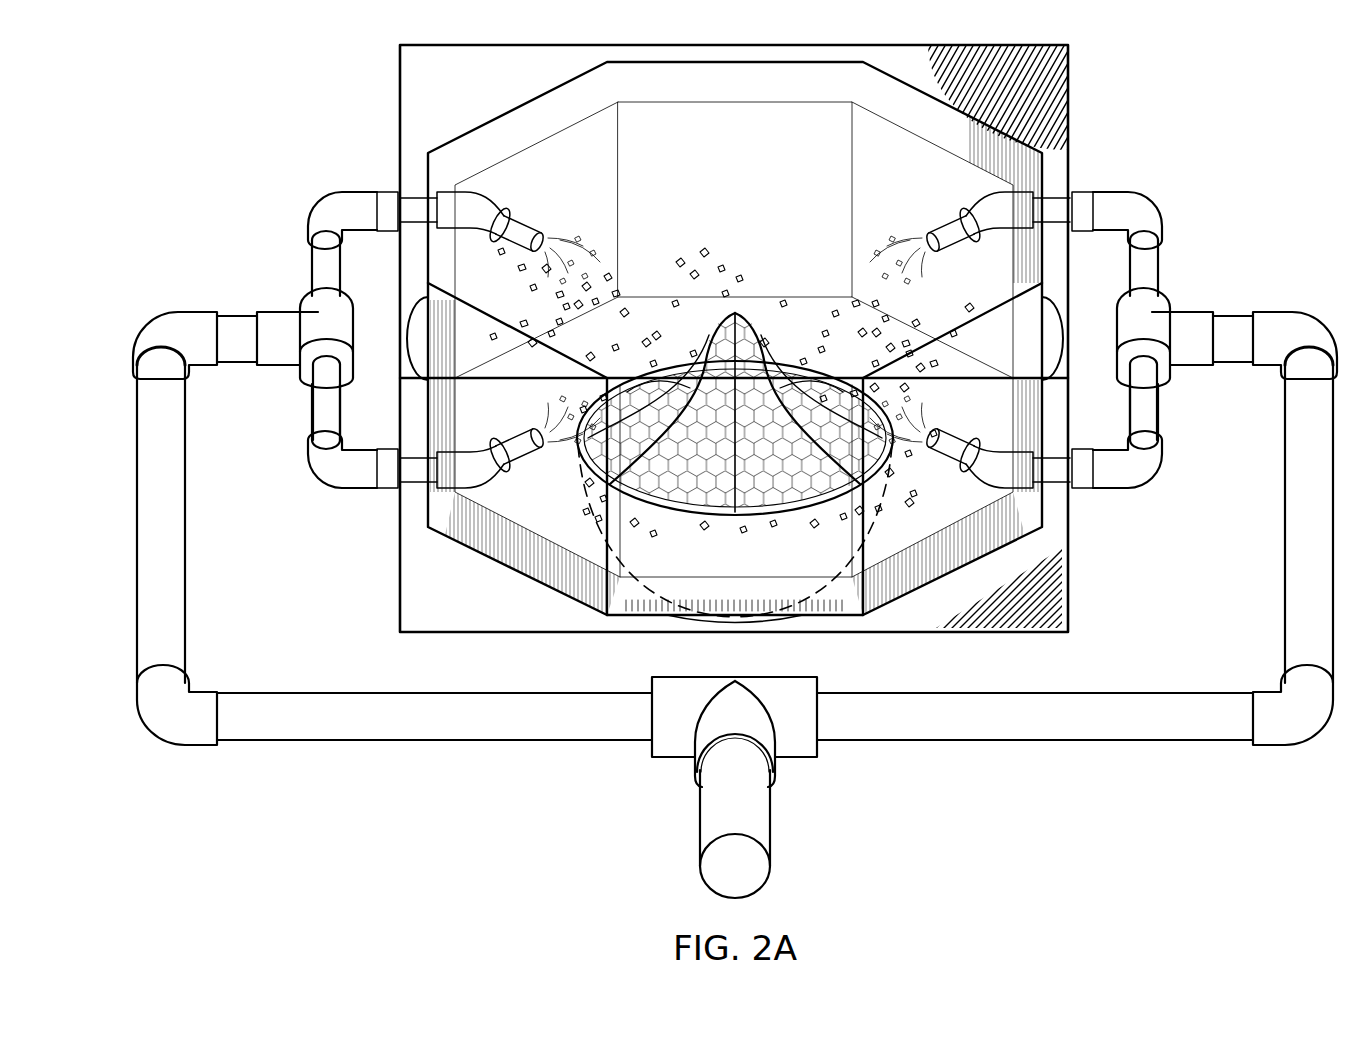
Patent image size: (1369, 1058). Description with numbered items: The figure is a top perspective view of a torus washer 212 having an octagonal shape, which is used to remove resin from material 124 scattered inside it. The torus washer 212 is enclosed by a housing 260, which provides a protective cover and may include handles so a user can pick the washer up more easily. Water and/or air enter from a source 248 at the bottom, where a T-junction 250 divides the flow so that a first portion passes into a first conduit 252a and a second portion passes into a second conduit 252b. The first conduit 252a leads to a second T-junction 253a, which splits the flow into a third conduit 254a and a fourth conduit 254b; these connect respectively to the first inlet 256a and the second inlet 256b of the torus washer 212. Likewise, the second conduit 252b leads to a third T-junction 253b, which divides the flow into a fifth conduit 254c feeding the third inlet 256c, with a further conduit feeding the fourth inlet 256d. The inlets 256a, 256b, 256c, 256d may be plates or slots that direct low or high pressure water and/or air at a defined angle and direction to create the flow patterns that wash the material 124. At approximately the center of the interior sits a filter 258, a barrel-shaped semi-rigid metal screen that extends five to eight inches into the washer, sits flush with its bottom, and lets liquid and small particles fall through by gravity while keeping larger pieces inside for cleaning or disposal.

The material 124 is at (680, 260).
The torus washer 212 is at (522, 102).
The source 248 is at (775, 829).
The T-junction 250 is at (795, 763).
The first conduit 252a is at (189, 528).
The second conduit 252b is at (1281, 528).
The second T-junction 253a is at (287, 307).
The third T-junction 253b is at (1181, 307).
The third conduit 254a is at (305, 253).
The fourth conduit 254b is at (305, 410).
The fifth conduit 254c is at (1163, 410).
The first inlet 256a is at (527, 213).
The second inlet 256b is at (532, 463).
The third inlet 256c is at (938, 463).
The fourth inlet 256d is at (945, 213).
The filter 258 is at (706, 334).
The housing 260 is at (1073, 113).